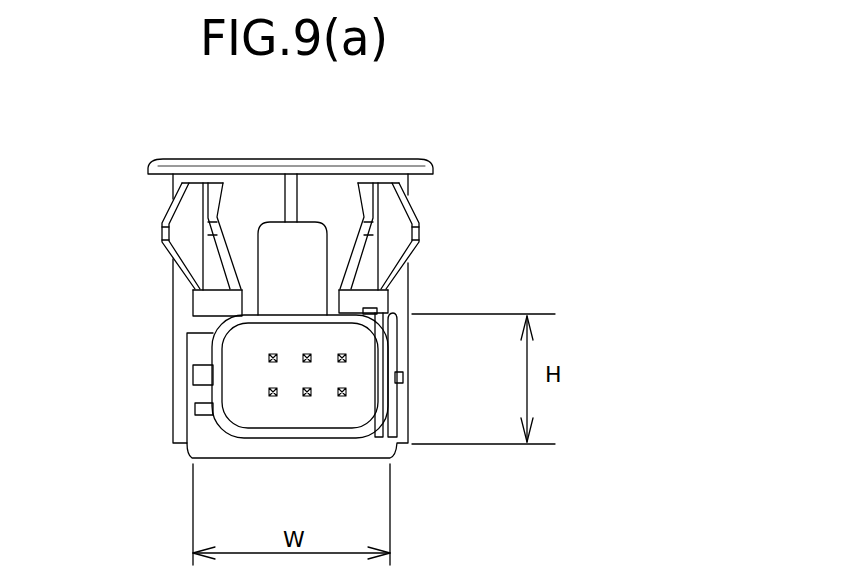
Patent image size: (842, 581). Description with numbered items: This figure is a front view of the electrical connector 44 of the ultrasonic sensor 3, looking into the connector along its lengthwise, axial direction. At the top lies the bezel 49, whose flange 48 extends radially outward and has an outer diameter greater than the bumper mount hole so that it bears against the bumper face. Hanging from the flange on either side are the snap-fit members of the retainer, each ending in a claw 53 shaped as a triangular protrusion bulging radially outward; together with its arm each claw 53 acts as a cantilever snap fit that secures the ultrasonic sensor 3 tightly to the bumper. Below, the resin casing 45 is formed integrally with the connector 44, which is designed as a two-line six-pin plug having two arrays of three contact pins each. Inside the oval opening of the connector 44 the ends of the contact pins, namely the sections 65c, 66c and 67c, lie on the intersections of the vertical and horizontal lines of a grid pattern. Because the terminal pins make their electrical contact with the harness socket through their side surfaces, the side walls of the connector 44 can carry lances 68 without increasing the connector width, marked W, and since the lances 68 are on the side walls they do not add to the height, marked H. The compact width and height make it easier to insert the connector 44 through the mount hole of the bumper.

The ultrasonic sensor 3 is at (450, 148).
The electrical connector 44 is at (342, 461).
The casing 45 is at (157, 377).
The flange 48 is at (198, 158).
The bezel 49 is at (337, 145).
The claw 53 is at (178, 222).
The contact pin end section 65c is at (408, 349).
The contact pin end section 66c is at (398, 258).
The contact pin end section 67c is at (307, 388).
The lance 68 is at (190, 382).